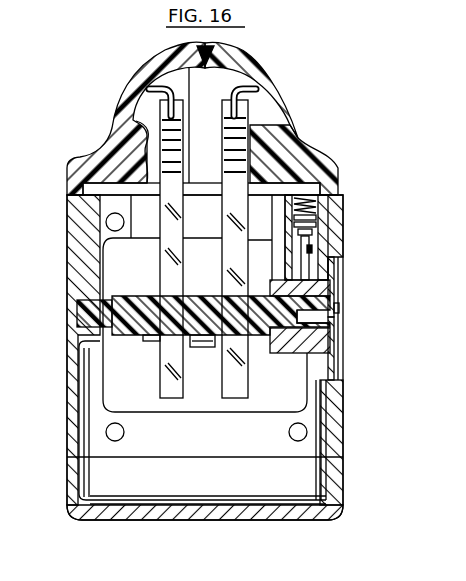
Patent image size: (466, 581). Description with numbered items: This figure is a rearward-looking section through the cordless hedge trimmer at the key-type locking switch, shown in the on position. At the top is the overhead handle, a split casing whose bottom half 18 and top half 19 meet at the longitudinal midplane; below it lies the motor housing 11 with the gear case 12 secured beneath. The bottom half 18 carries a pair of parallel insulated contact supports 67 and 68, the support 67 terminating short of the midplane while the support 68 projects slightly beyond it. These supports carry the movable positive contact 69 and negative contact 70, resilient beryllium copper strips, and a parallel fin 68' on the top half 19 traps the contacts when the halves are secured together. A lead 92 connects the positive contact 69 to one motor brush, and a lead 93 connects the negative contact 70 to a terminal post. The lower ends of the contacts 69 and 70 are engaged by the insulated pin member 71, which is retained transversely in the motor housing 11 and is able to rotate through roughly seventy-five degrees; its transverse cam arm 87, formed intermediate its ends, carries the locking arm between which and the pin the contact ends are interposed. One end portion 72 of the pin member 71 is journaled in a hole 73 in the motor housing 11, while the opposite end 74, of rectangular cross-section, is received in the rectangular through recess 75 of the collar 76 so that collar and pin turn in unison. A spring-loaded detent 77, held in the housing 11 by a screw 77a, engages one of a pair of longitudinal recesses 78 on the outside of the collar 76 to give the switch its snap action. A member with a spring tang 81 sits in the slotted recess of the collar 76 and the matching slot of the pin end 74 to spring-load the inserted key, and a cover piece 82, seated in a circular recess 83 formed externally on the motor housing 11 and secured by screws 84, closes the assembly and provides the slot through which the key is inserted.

The motor housing 11 is at (72, 235).
The gear case 12 is at (100, 477).
The bottom half 18 is at (69, 168).
The top half 19 is at (286, 124).
The contact support 67 is at (148, 108).
The contact support 68 is at (139, 125).
The fin 68' is at (304, 160).
The positive contact 69 is at (163, 268).
The negative contact 70 is at (228, 270).
The pin member 71 is at (143, 337).
The end portion 72 is at (85, 305).
The hole 73 is at (77, 320).
The opposite end 74 is at (268, 330).
The through recess 75 is at (282, 325).
The collar 76 is at (270, 286).
The spring-loaded detent 77 is at (312, 262).
The screw 77a is at (318, 205).
The longitudinal recess 78 is at (285, 280).
The spring tang 81 is at (335, 305).
The cover piece 82 is at (335, 353).
The circular recess 83 is at (342, 372).
The screw 84 is at (340, 327).
The transverse cam arm 87 is at (208, 350).
The lead 92 is at (238, 80).
The lead 93 is at (158, 86).